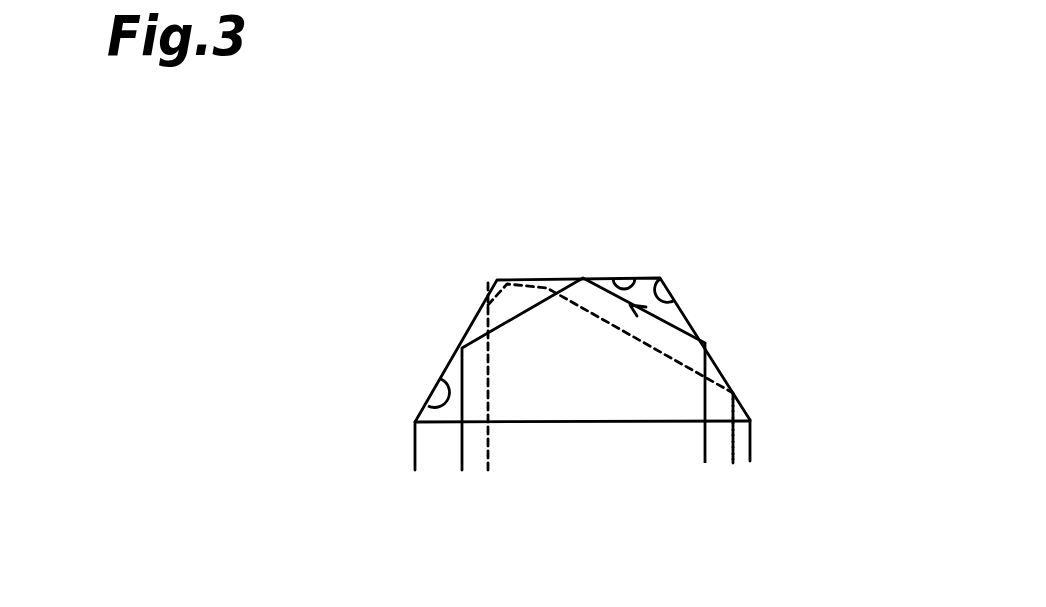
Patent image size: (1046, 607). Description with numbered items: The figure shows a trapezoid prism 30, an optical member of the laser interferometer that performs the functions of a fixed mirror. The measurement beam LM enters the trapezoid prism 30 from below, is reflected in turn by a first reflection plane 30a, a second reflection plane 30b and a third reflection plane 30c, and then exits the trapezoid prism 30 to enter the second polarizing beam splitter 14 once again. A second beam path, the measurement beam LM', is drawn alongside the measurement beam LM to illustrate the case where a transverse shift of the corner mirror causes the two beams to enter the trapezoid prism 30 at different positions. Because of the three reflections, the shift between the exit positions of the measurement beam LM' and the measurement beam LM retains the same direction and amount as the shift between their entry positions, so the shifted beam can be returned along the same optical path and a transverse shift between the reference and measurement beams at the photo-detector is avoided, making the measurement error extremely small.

The trapezoid prism 30 is at (680, 310).
The first reflection plane 30a is at (662, 280).
The second reflection plane 30b is at (643, 278).
The third reflection plane 30c is at (434, 396).
The second polarizing beam splitter 14 is at (740, 448).
The measurement beam LM is at (636, 451).
The measurement beam LM' is at (750, 491).